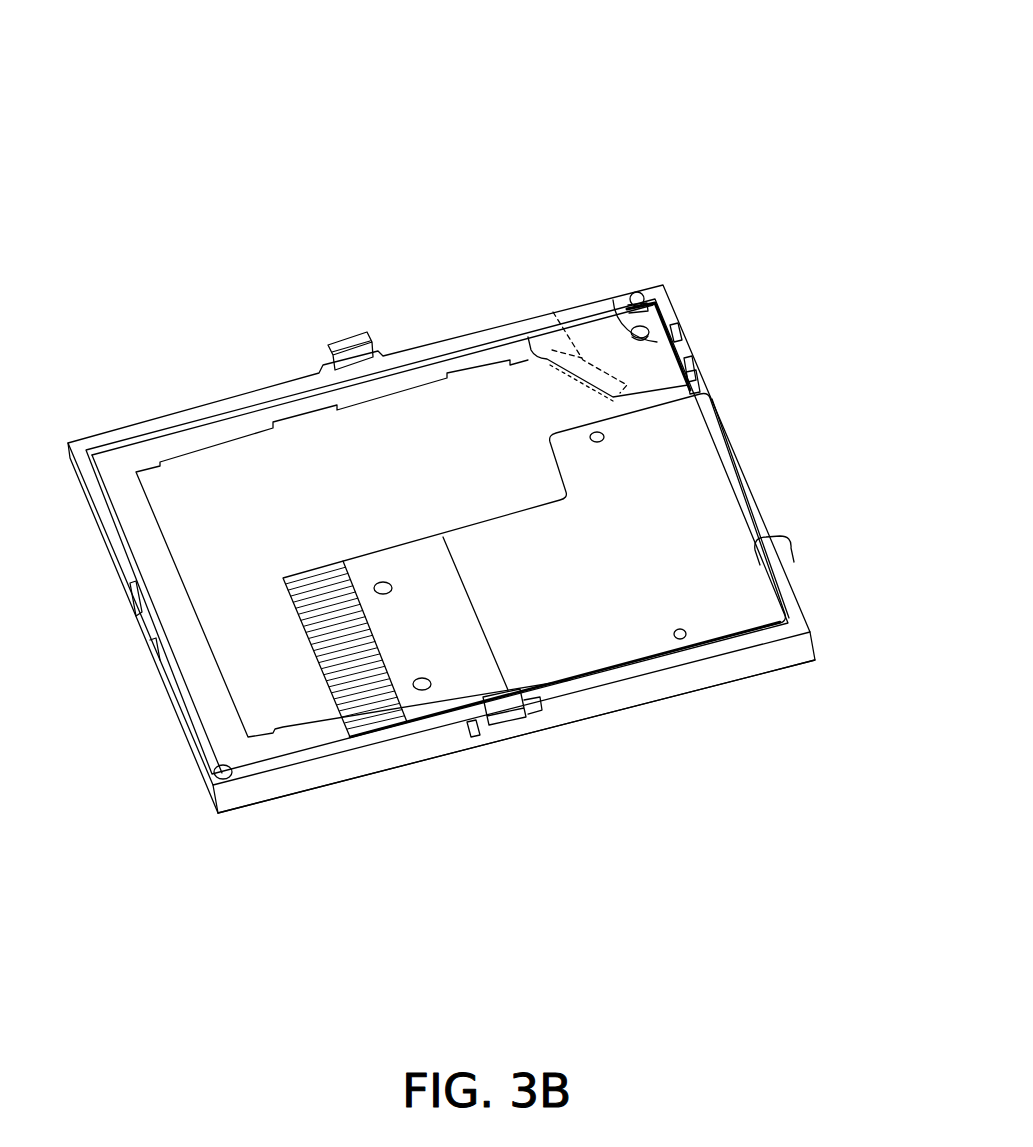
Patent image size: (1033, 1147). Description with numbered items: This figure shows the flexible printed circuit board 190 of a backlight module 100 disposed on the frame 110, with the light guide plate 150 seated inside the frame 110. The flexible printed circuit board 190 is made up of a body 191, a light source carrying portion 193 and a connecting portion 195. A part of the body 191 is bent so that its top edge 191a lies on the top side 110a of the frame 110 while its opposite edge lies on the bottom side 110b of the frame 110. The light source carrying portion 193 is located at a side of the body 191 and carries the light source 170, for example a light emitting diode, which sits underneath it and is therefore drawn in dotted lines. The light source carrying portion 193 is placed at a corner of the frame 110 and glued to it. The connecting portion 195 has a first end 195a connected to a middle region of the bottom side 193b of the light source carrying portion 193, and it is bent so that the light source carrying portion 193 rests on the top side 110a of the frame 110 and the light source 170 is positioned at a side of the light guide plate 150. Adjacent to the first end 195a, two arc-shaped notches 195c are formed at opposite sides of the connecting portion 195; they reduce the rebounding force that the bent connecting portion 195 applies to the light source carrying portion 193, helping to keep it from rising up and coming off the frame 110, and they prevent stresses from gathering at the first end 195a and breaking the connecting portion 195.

The backlight module 100 is at (916, 31).
The frame 110 is at (173, 408).
The top side of the frame 110a is at (740, 637).
The bottom side of the frame 110b is at (670, 702).
The light guide plate 150 is at (197, 500).
The light source 170 is at (553, 312).
The flexible printed circuit board 190 is at (287, 653).
The body 191 is at (700, 525).
The top edge of the body 191a is at (330, 688).
The light source carrying portion 193 is at (598, 325).
The bottom side of the light source carrying portion 193b is at (673, 343).
The connecting portion 195 is at (690, 375).
The first end of the connecting portion 195a is at (613, 300).
The notches 195c is at (690, 367).